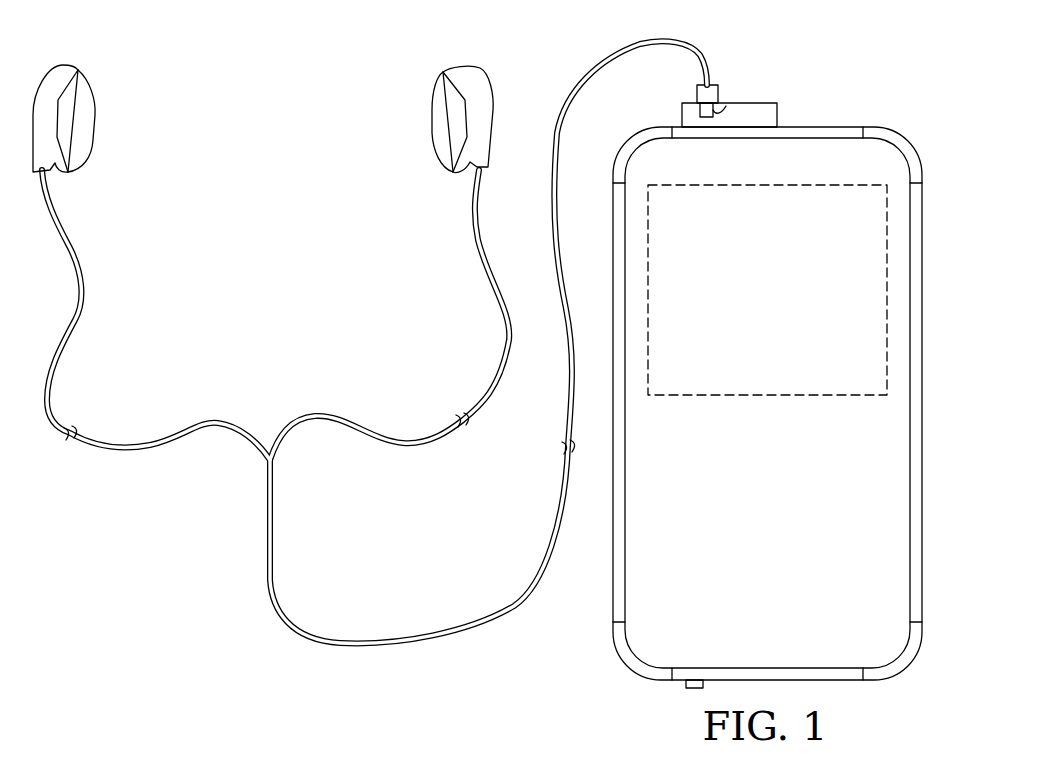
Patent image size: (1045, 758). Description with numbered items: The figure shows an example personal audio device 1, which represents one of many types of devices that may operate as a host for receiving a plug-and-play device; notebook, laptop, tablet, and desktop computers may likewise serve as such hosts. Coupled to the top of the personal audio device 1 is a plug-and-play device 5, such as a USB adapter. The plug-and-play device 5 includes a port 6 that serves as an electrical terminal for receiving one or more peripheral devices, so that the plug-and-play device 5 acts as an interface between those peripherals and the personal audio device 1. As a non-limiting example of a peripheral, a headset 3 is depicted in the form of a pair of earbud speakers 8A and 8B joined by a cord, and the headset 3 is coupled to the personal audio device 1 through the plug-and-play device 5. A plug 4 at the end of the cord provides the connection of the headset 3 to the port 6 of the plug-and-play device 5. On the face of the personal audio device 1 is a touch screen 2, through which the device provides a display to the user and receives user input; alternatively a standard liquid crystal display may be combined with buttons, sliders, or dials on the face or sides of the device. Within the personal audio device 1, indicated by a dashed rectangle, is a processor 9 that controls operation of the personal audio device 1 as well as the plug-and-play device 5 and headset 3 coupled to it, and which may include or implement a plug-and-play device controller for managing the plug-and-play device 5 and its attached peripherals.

The personal audio device 1 is at (905, 143).
The touch screen 2 is at (758, 566).
The headset 3 is at (222, 420).
The plug 4 is at (695, 94).
The plug-and-play device 5 is at (778, 117).
The port 6 is at (718, 110).
The earbud speaker 8A is at (460, 65).
The earbud speaker 8B is at (63, 63).
The processor 9 is at (787, 395).